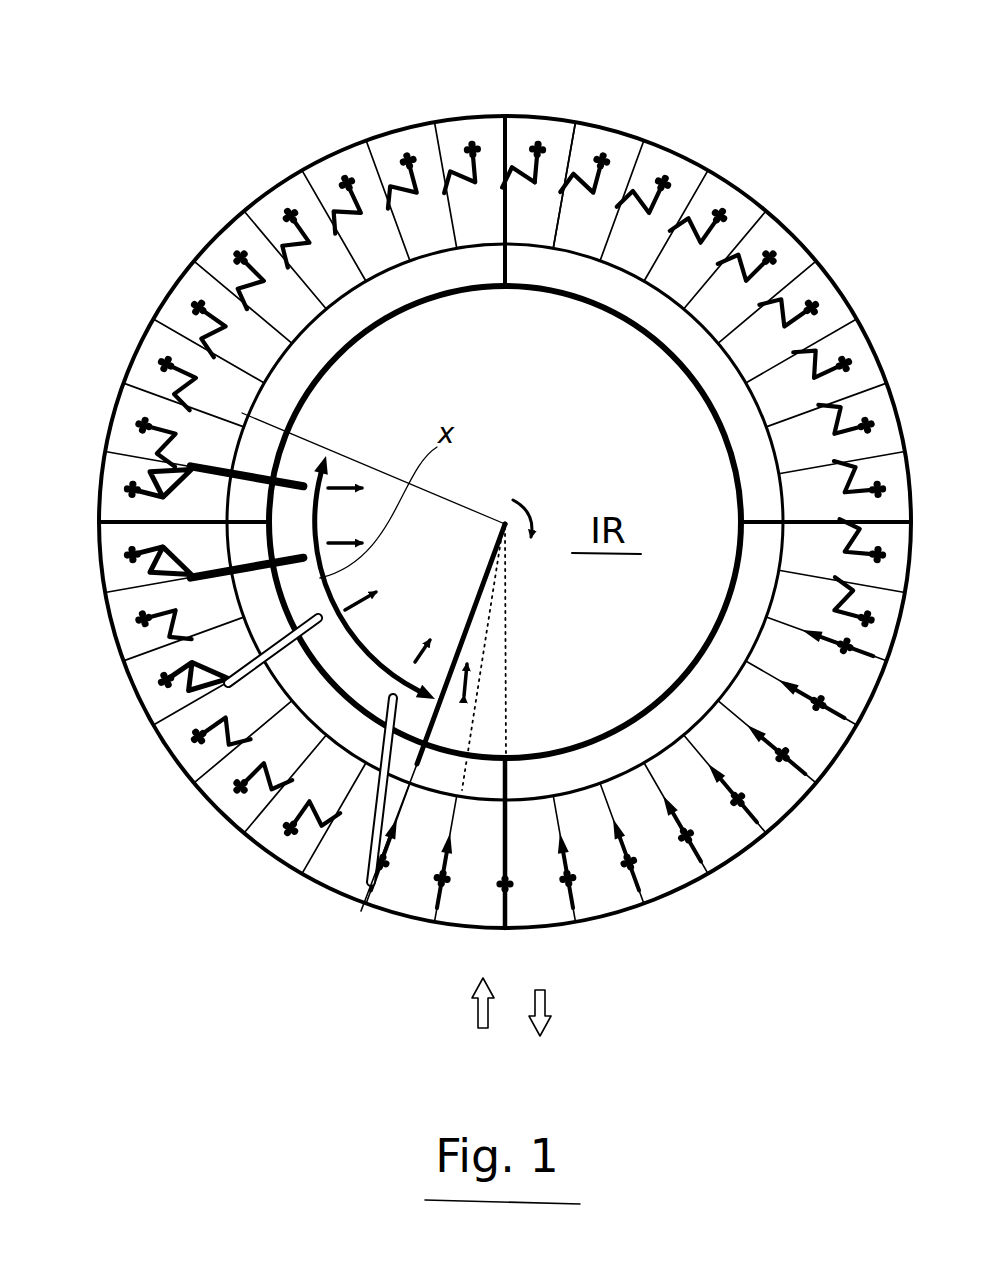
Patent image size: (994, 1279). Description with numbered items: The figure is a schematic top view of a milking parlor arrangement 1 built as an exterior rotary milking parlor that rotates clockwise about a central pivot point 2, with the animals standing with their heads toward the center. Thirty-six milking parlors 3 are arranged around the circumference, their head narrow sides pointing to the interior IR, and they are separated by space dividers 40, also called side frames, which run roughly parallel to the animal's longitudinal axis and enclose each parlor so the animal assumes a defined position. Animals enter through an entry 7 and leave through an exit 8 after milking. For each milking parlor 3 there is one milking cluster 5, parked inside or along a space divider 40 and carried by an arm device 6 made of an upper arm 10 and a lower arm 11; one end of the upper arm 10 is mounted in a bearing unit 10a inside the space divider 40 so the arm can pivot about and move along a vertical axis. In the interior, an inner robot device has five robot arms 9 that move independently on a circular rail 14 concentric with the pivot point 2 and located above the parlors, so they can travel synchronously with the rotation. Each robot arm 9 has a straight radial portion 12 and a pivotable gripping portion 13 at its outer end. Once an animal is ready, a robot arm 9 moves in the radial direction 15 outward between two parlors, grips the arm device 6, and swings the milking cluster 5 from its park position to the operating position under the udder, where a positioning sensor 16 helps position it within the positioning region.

The milking parlor arrangement 1 is at (289, 118).
The space divider 40 is at (432, 142).
The arm device 6 is at (515, 148).
The upper arm 10 is at (549, 162).
The bearing unit 10a is at (540, 182).
The milking cluster 5 is at (608, 152).
The lower arm 11 is at (587, 185).
The rail 14 is at (378, 318).
The radial direction 15 is at (338, 472).
The pivot point 2 is at (505, 522).
The robot arm 9 is at (216, 456).
The gripping portion 13 is at (192, 440).
The positioning sensor 16 is at (157, 546).
The straight radial portion 12 is at (222, 576).
The milking parlor 3 is at (662, 860).
The entry 7 is at (472, 1010).
The exit 8 is at (555, 1008).